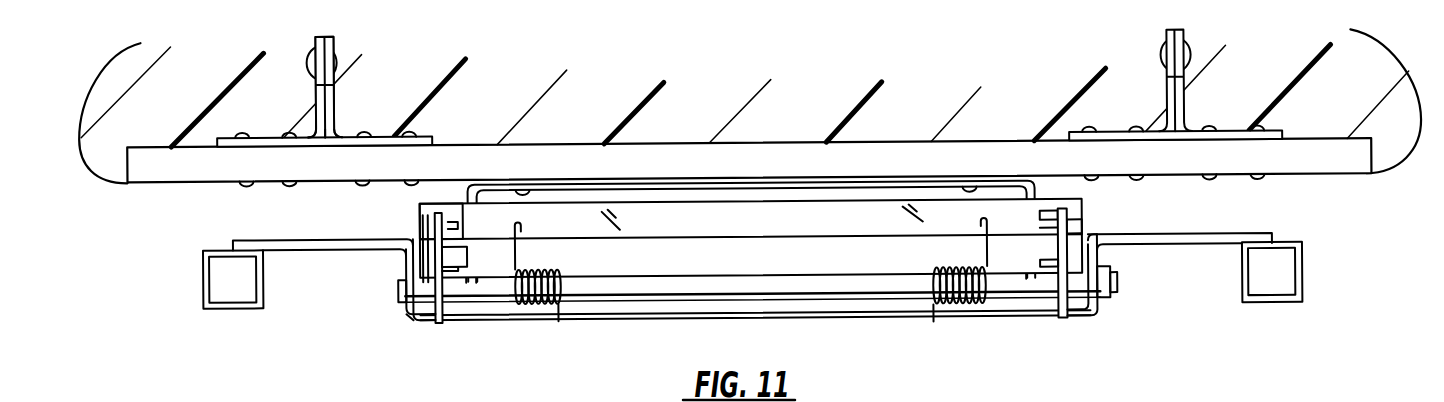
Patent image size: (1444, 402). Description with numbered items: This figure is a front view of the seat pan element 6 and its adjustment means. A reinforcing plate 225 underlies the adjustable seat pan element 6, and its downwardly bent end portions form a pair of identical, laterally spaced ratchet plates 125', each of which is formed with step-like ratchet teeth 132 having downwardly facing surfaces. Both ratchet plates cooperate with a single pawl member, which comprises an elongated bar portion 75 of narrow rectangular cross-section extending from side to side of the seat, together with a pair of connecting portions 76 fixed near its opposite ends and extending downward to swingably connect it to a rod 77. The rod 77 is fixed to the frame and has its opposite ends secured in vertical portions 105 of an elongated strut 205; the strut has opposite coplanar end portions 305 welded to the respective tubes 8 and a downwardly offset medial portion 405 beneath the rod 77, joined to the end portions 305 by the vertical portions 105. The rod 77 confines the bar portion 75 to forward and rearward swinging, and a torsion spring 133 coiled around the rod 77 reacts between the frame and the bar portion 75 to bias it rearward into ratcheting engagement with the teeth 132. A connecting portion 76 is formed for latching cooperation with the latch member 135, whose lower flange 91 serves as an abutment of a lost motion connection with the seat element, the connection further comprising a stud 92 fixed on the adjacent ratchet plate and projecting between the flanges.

The seat pan element 6 is at (573, 141).
The tubes 8 is at (203, 280).
The bar portion 75 is at (785, 238).
The connecting portions 76 is at (420, 208).
The rod 77 is at (675, 302).
The lower flange 91 is at (440, 322).
The stud 92 is at (458, 268).
The vertical portions 105 is at (409, 257).
The ratchet plates 125' is at (793, 193).
The ratchet teeth 132 is at (473, 258).
The torsion spring 133 is at (553, 268).
The latch member 135 is at (413, 316).
The elongated strut 205 is at (1208, 233).
The reinforcing plate 225 is at (757, 186).
The end portions 305 is at (282, 240).
The medial portion 405 is at (887, 319).